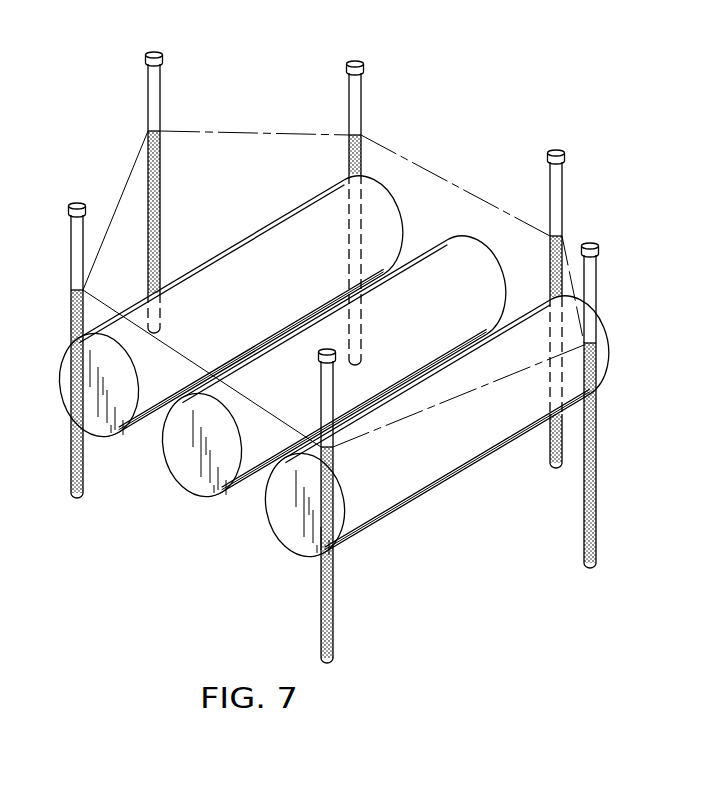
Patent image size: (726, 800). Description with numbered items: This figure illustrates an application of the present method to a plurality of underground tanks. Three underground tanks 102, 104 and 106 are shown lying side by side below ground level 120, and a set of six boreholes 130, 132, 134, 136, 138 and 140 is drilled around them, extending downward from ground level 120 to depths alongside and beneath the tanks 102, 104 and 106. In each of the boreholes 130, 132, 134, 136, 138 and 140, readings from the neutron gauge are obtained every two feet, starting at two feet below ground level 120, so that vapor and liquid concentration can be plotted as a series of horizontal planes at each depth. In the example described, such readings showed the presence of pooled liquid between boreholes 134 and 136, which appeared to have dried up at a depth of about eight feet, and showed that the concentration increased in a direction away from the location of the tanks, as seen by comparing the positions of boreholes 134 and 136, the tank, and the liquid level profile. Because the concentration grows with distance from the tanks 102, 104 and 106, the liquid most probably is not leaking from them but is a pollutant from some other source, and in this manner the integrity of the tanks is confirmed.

The underground tank 102 is at (278, 304).
The underground tank 104 is at (432, 332).
The underground tank 106 is at (478, 434).
The ground level 120 is at (400, 152).
The borehole 130 is at (100, 186).
The borehole 132 is at (163, 62).
The borehole 134 is at (365, 70).
The borehole 136 is at (565, 160).
The borehole 138 is at (598, 252).
The borehole 140 is at (320, 352).